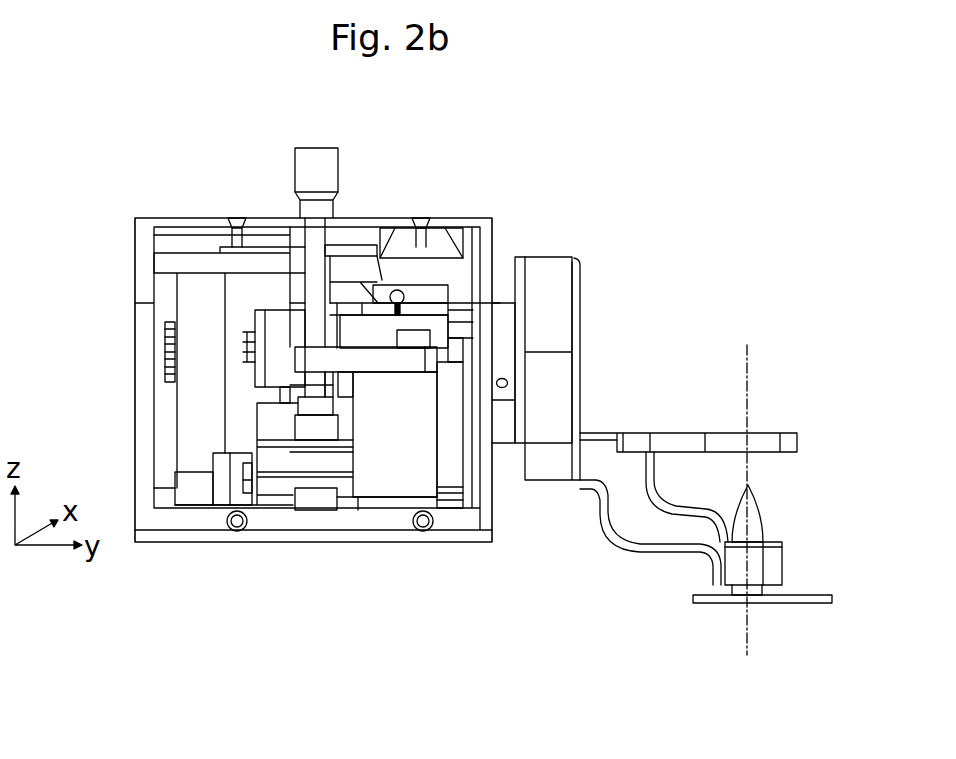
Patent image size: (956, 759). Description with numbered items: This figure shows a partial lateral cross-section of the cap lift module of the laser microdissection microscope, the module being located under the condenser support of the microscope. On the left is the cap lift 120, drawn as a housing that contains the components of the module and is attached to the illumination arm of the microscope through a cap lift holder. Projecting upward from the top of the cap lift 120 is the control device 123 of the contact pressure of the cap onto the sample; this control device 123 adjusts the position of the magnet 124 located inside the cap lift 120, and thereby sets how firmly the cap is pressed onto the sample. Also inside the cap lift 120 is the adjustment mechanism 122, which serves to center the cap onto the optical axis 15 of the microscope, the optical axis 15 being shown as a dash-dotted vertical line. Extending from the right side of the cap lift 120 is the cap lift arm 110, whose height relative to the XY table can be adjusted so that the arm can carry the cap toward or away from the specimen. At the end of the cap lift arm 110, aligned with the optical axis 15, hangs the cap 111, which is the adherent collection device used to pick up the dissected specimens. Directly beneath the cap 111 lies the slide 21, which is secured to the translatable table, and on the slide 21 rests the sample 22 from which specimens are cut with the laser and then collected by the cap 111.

The cap lift 120 is at (133, 218).
The control device of the contact pressure 123 is at (325, 165).
The adjustment mechanism 122 is at (348, 278).
The magnet 124 is at (303, 428).
The cap lift arm 110 is at (563, 296).
The optical axis 15 is at (760, 382).
The cap 111 is at (760, 590).
The slide 21 is at (705, 603).
The sample 22 is at (767, 605).